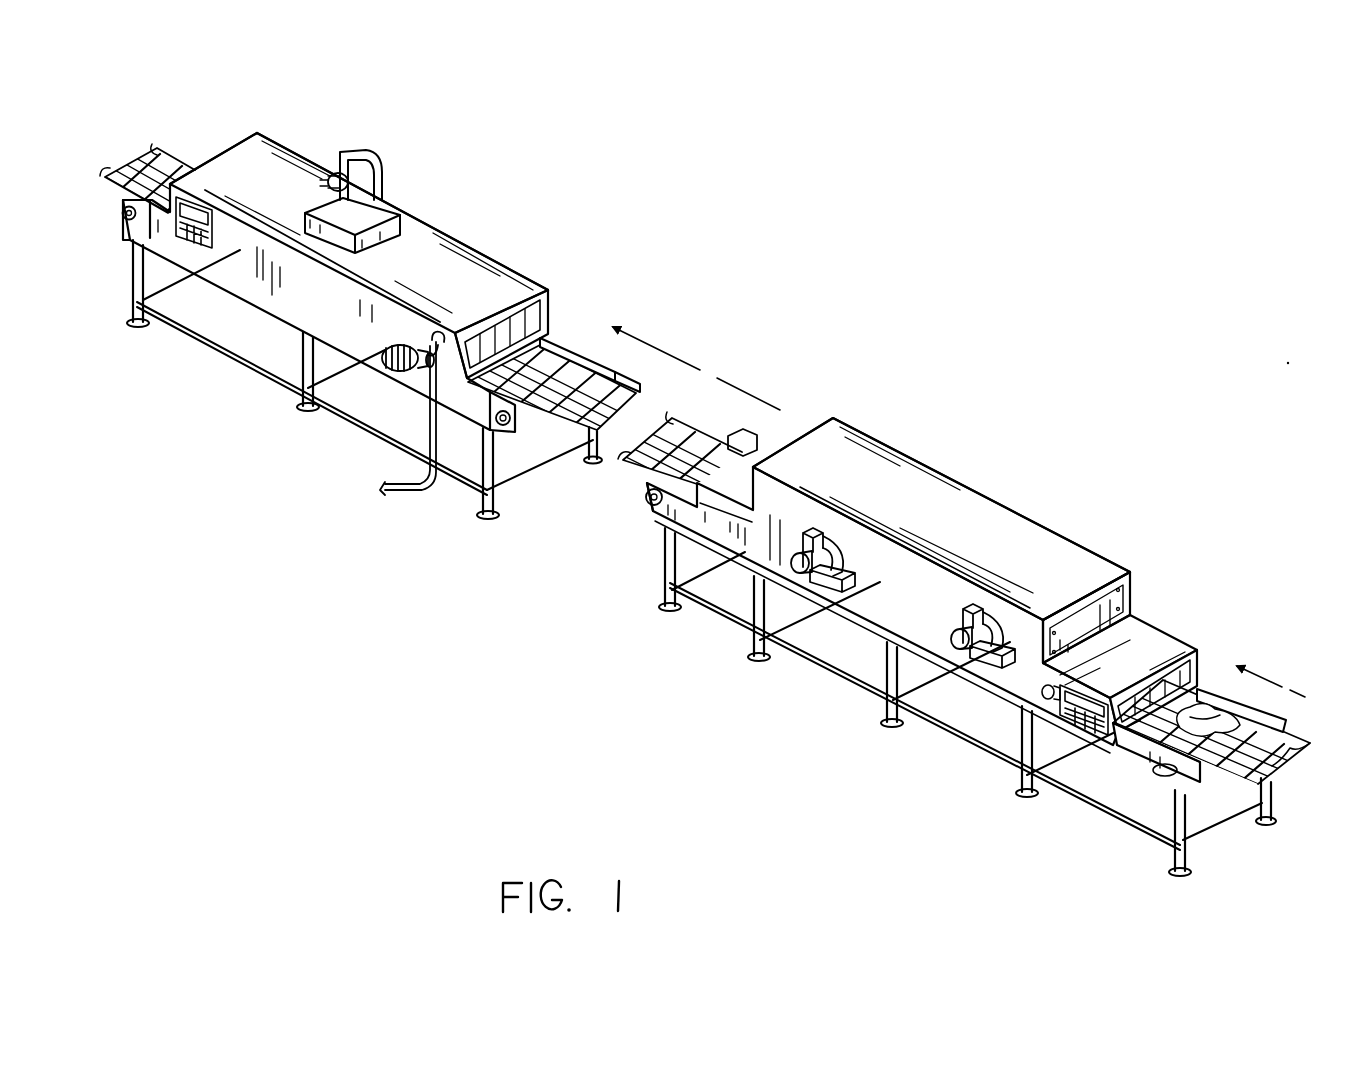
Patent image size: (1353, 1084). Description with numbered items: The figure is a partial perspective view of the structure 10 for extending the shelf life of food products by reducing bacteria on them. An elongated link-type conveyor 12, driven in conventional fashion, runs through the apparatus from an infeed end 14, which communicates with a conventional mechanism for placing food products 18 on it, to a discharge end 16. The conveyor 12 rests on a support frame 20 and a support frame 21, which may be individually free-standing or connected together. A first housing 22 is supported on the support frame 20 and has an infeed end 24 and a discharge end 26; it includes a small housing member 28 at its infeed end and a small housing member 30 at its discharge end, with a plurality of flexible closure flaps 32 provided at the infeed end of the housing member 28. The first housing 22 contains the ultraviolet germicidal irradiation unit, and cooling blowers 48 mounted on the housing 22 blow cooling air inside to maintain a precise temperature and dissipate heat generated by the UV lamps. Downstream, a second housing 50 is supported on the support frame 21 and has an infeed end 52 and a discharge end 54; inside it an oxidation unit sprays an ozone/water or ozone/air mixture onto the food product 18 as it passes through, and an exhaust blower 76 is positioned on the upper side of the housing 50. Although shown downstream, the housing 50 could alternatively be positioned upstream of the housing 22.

The structure for extending the shelf life of food products 10 is at (950, 596).
The elongated link-type conveyor 12 is at (637, 473).
The infeed end 14 is at (1293, 775).
The discharge end 16 is at (130, 152).
The food product 18 is at (1210, 688).
The support frame 20 is at (950, 608).
The support frame 21 is at (374, 308).
The first housing 22 is at (1035, 518).
The infeed end 24 is at (1210, 645).
The discharge end 26 is at (722, 457).
The small housing member 28 is at (1147, 650).
The small housing member 30 is at (780, 437).
The flexible closure flaps 32 is at (1197, 690).
The cooling blowers 48 is at (942, 613).
The second housing 50 is at (452, 230).
The infeed end 52 is at (560, 325).
The discharge end 54 is at (226, 143).
The exhaust blower 76 is at (372, 178).